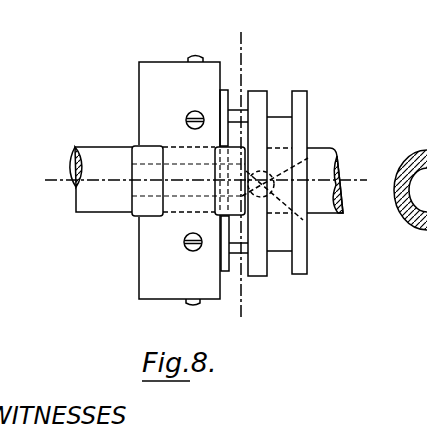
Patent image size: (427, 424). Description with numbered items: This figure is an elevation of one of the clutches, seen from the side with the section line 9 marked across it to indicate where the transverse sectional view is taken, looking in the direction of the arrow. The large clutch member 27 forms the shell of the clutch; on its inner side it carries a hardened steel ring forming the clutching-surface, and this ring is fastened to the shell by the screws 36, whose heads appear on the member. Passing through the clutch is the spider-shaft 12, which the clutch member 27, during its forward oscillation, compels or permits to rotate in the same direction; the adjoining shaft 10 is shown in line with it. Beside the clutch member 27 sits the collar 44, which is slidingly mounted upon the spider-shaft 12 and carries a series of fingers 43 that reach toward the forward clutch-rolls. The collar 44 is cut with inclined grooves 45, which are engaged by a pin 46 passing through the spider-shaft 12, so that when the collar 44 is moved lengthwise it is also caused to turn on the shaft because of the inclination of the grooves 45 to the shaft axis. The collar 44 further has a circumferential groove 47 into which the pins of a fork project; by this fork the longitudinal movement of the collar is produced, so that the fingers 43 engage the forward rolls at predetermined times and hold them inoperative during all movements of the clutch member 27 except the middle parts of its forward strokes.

The section line 9 is at (279, 50).
The shaft 10 is at (206, 179).
The spider-shaft 12 is at (331, 174).
The clutch member 27 is at (150, 83).
The screws 36 is at (197, 56).
The fingers 43 is at (237, 100).
The collar 44 is at (301, 116).
The grooves 45 is at (291, 176).
The pin 46 is at (297, 216).
The circumferential groove 47 is at (278, 100).